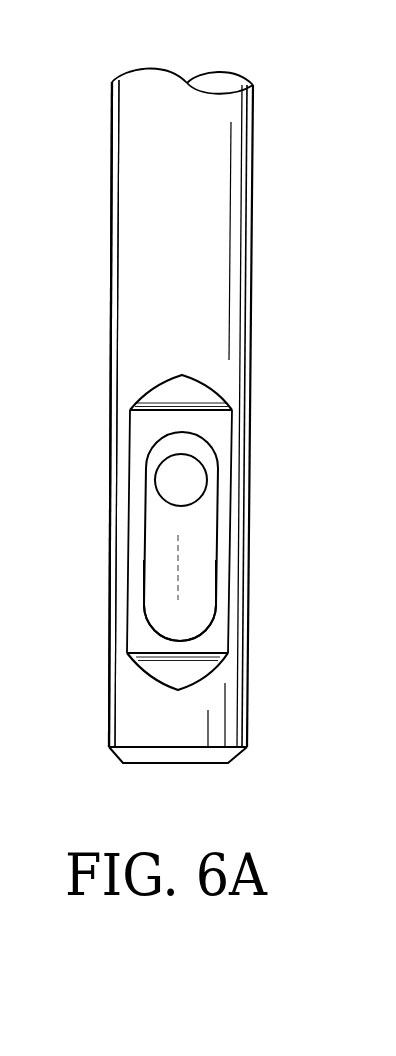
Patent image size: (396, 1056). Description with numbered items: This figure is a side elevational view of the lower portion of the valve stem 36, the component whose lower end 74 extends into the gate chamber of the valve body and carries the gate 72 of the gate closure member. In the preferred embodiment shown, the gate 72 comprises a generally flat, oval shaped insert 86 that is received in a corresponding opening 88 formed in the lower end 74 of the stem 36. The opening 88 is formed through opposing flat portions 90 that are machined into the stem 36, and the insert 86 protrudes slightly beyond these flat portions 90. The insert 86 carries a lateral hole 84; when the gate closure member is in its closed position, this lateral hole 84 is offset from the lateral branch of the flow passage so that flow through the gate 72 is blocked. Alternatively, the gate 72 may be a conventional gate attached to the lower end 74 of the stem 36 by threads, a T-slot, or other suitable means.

The valve stem 36 is at (258, 129).
The lower end 74 is at (145, 200).
The gate 72 is at (224, 530).
The lateral hole 84 is at (190, 484).
The insert 86 is at (163, 524).
The opening 88 is at (203, 572).
The flat portions 90 is at (217, 640).